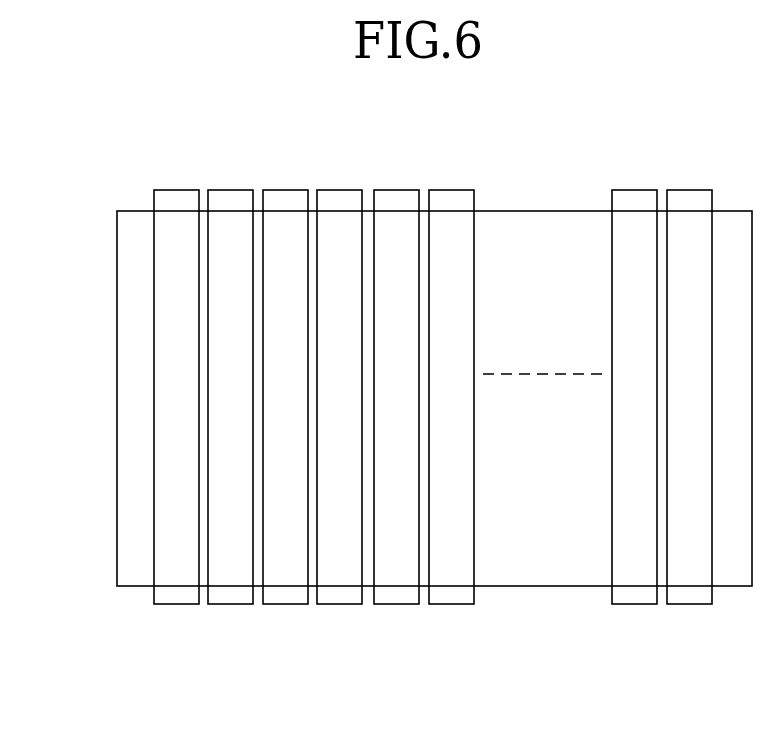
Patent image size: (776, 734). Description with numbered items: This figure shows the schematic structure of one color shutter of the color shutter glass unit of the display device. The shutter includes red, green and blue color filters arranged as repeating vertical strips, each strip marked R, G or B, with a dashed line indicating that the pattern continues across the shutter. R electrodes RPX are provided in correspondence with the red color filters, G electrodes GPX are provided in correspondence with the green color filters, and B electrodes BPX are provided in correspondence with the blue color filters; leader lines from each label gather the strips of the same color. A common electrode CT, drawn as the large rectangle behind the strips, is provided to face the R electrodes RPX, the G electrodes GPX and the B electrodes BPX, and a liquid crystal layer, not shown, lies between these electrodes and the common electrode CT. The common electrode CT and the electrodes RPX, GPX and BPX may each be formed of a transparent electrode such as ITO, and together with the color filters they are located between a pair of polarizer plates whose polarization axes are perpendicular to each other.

The common electrode CT is at (127, 423).
The R electrodes RPX is at (335, 610).
The G electrodes GPX is at (623, 610).
The B electrodes BPX is at (293, 610).